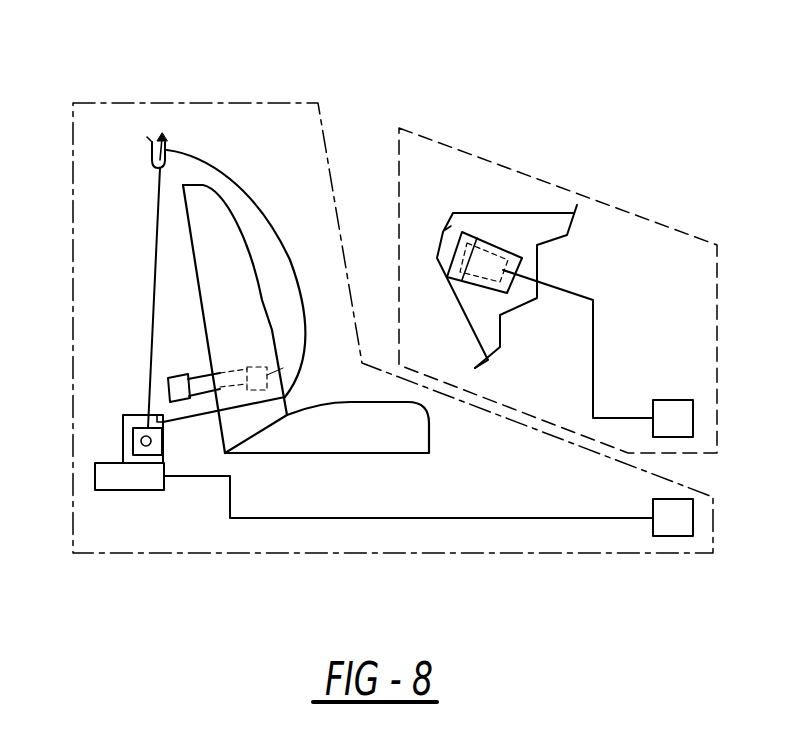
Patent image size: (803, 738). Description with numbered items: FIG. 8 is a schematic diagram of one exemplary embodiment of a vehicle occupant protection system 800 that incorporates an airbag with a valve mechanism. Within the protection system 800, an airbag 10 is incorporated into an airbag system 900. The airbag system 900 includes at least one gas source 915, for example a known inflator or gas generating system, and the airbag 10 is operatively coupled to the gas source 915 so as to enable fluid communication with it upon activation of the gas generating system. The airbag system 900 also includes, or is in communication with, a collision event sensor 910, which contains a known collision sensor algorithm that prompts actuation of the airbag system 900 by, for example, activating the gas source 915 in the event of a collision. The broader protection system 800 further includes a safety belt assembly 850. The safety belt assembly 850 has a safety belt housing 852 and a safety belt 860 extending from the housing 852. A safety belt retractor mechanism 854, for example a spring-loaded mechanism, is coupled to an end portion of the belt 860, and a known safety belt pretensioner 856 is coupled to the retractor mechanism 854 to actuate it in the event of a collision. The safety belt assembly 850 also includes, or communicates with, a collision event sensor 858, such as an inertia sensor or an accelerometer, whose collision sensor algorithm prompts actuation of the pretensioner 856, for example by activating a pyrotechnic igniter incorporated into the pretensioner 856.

The vehicle occupant protection system 800 is at (196, 38).
The safety belt assembly 850 is at (305, 384).
The safety belt housing 852 is at (131, 440).
The safety belt retractor mechanism 854 is at (121, 415).
The safety belt pretensioner 856 is at (132, 478).
The collision event sensor 858 is at (670, 537).
The safety belt 860 is at (203, 158).
The airbag 10 is at (452, 245).
The gas source 915 is at (489, 258).
The collision event sensor 910 is at (673, 413).
The airbag system 900 is at (683, 232).